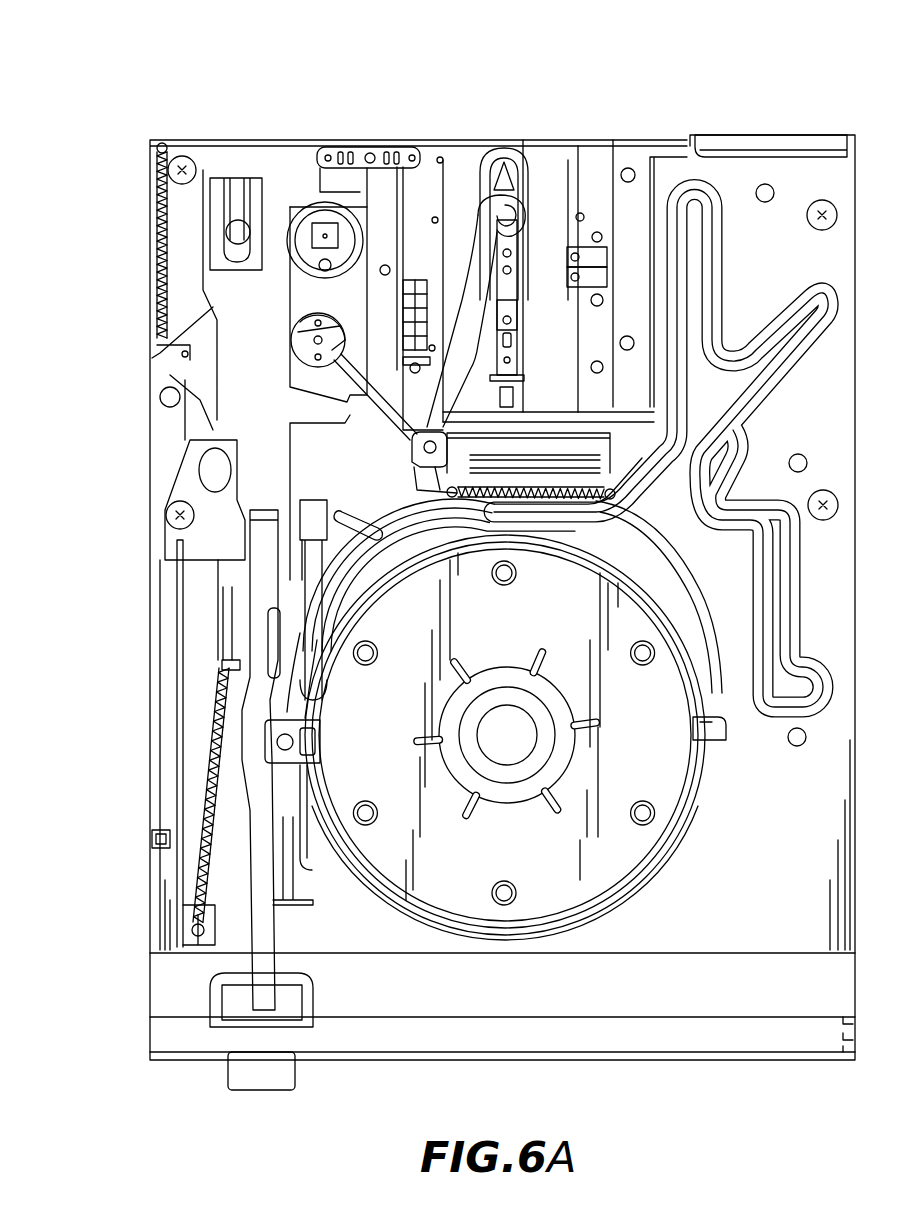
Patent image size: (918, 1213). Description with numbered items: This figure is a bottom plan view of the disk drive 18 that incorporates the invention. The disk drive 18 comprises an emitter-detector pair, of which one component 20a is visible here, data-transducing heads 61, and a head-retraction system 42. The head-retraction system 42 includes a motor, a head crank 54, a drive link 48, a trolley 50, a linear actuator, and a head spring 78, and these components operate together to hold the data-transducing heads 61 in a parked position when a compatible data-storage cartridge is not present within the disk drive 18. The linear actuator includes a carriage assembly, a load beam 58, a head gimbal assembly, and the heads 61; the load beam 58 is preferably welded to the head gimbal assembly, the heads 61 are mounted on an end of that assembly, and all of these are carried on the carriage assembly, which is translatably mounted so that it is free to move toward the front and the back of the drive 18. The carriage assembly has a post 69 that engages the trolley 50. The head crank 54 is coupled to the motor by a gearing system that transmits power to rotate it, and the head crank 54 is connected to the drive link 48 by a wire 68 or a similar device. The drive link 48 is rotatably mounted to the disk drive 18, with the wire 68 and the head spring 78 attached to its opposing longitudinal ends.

The disk drive 18 is at (763, 120).
The spring 20a is at (180, 902).
The head-retraction system 42 is at (523, 103).
The drive link 48 is at (400, 468).
The trolley 50 is at (482, 208).
The head crank 54 is at (296, 343).
The load beam 58 is at (517, 333).
The data-transducing heads 61 is at (507, 397).
The wire 68 is at (383, 432).
The post 69 is at (518, 163).
The head spring 78 is at (615, 500).